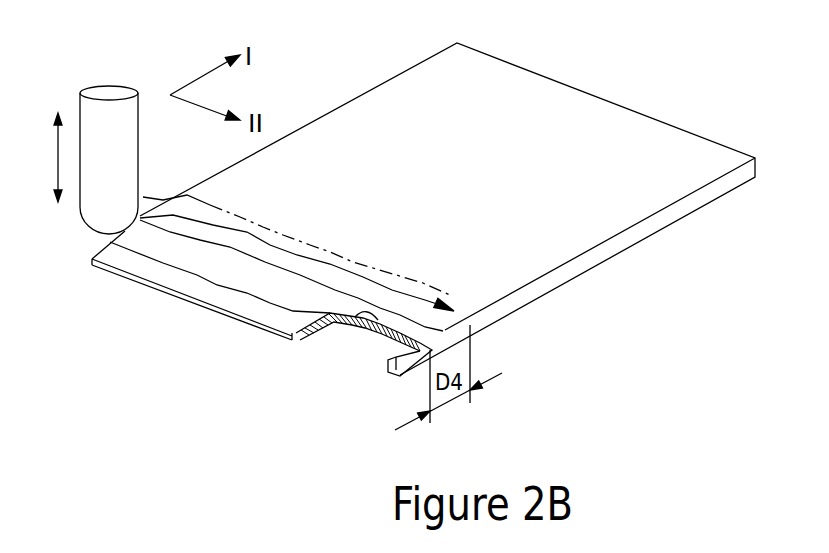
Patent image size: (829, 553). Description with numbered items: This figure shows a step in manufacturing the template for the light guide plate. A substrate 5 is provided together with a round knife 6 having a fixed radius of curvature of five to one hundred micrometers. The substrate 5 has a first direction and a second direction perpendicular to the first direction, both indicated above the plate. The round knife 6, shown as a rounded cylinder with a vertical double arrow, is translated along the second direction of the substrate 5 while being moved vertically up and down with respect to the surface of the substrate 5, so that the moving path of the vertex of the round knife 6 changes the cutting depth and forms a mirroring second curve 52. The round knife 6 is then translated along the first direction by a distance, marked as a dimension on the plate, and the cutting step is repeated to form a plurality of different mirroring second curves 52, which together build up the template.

The substrate 5 is at (667, 150).
The round knife 6 is at (105, 125).
The mirroring second curve 52 is at (335, 328).